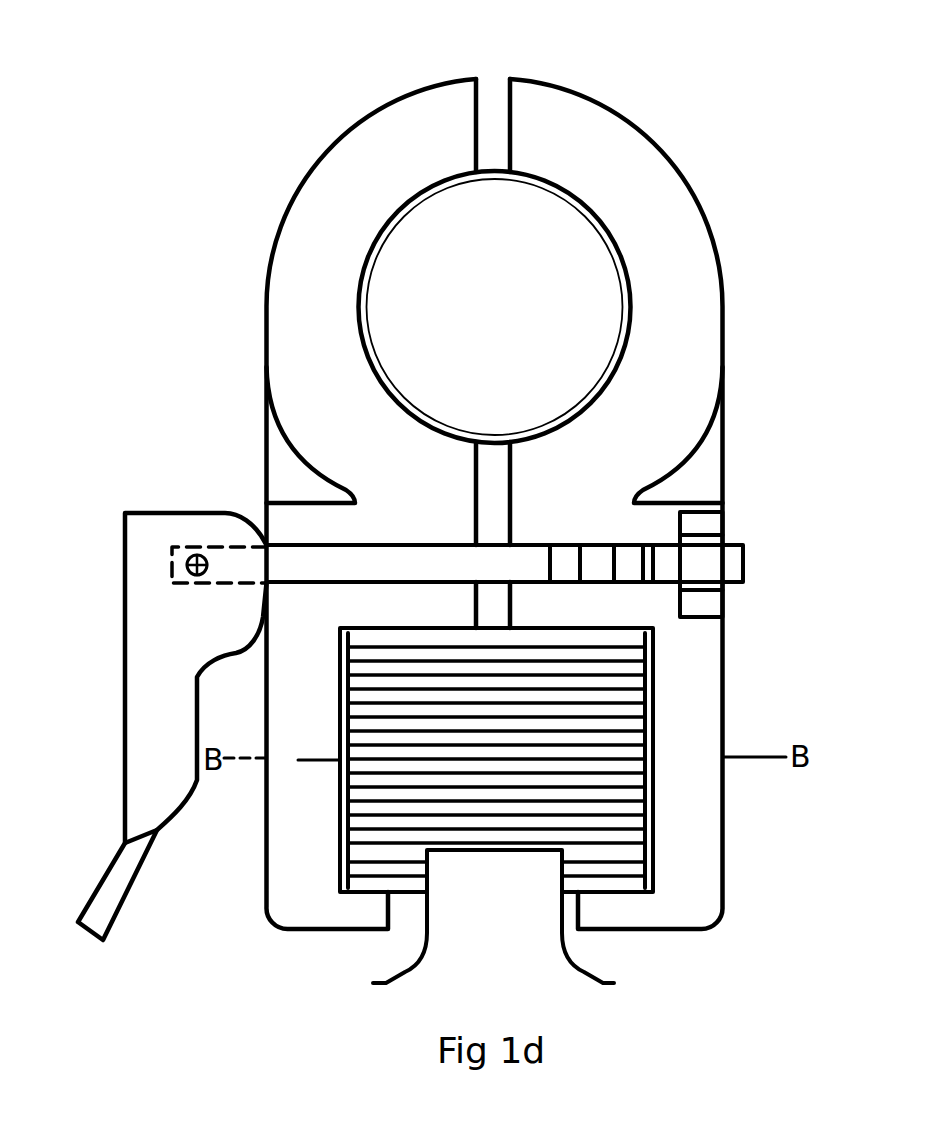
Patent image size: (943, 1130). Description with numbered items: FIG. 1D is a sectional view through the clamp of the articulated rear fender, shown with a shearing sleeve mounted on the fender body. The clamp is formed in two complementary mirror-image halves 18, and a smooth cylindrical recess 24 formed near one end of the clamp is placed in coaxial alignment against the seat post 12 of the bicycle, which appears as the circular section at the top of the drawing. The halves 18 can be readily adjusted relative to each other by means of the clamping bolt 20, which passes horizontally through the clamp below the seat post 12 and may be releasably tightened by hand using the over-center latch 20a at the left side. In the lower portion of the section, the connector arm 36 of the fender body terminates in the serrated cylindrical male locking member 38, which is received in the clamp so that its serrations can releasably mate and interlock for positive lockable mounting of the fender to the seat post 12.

The seat post 12 is at (603, 226).
The clamp halves 18 is at (274, 246).
The clamping bolt 20 is at (746, 552).
The over-center latch 20a is at (116, 720).
The smooth cylindrical recess 24 is at (381, 226).
The connector arm 36 is at (567, 945).
The serrated cylindrical male locking member 38 is at (615, 690).